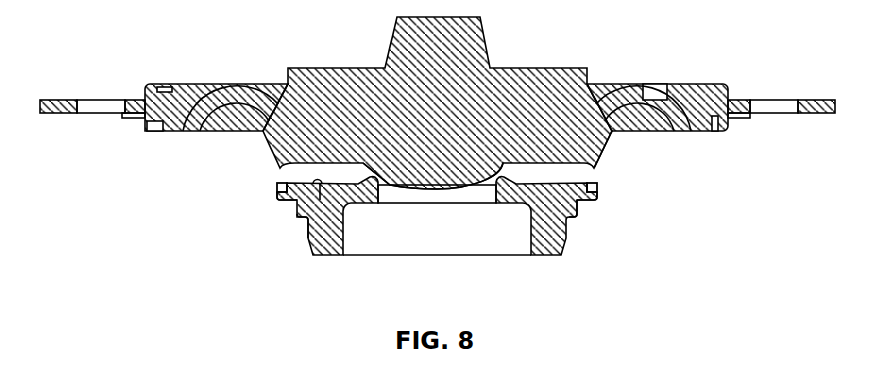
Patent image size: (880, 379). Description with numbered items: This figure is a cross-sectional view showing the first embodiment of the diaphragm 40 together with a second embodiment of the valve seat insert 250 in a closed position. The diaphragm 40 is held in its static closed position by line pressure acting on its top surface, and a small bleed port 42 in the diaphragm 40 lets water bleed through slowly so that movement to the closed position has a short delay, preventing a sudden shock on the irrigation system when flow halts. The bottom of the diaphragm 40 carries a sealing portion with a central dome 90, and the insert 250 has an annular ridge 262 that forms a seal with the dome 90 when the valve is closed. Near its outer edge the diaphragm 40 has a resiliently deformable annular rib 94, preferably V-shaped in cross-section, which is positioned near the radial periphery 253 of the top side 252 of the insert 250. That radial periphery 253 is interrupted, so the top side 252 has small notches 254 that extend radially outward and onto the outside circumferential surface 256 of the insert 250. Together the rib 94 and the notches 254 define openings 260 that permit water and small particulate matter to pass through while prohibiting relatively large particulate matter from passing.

The diaphragm 40 is at (532, 68).
The bleed port 42 is at (663, 70).
The central dome 90 is at (467, 185).
The annular rib 94 is at (602, 168).
The insert 250 is at (566, 242).
The top side 252 is at (306, 222).
The radial periphery 253 is at (598, 206).
The notches 254 is at (266, 186).
The outside circumferential surface 256 is at (598, 192).
The openings 260 is at (270, 193).
The annular ridge 262 is at (390, 185).